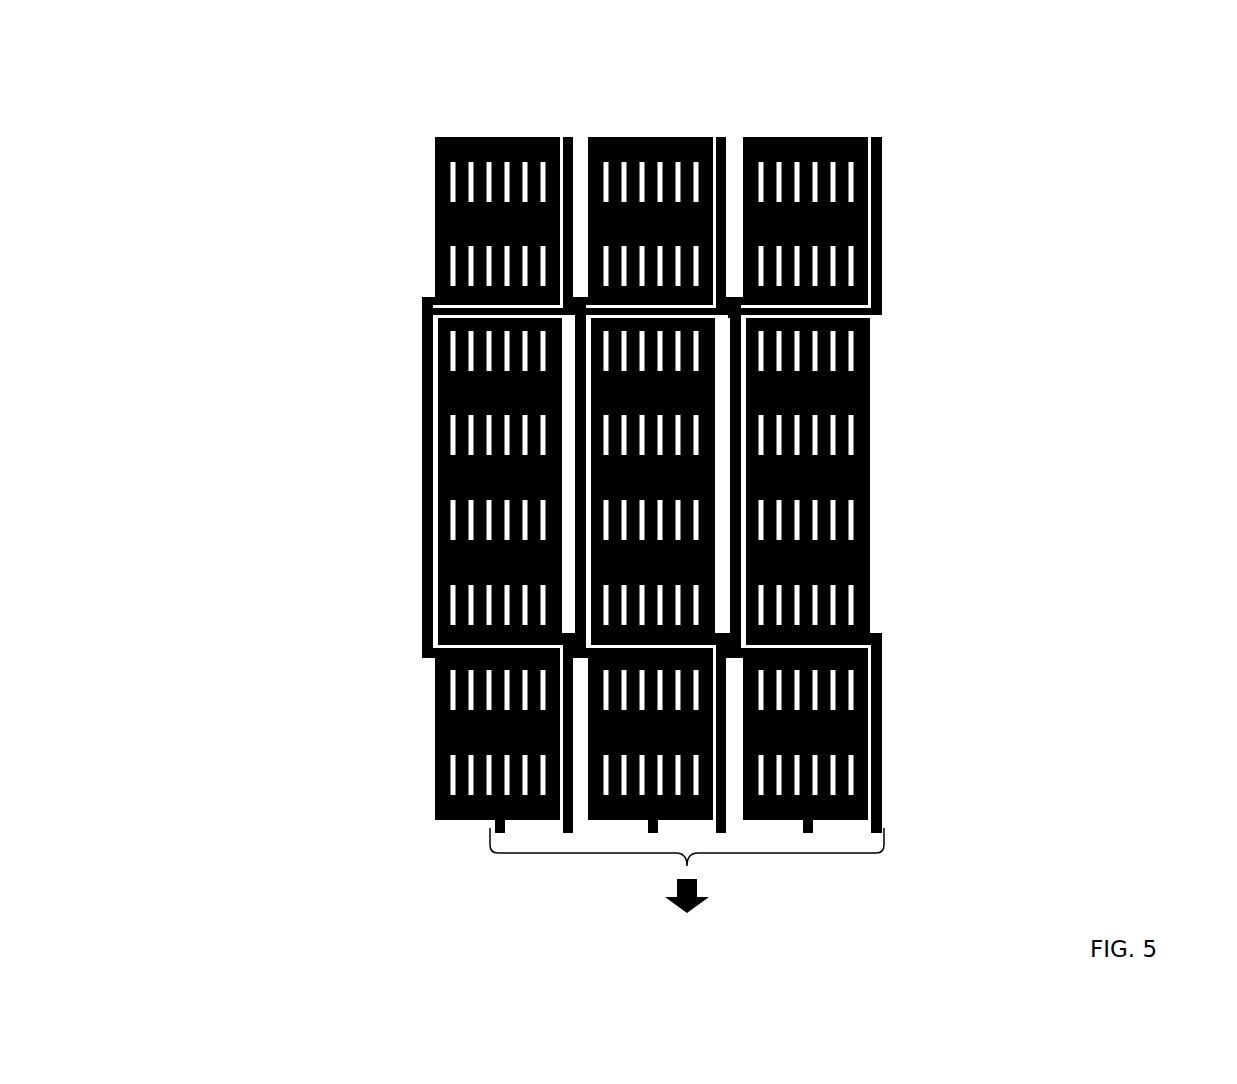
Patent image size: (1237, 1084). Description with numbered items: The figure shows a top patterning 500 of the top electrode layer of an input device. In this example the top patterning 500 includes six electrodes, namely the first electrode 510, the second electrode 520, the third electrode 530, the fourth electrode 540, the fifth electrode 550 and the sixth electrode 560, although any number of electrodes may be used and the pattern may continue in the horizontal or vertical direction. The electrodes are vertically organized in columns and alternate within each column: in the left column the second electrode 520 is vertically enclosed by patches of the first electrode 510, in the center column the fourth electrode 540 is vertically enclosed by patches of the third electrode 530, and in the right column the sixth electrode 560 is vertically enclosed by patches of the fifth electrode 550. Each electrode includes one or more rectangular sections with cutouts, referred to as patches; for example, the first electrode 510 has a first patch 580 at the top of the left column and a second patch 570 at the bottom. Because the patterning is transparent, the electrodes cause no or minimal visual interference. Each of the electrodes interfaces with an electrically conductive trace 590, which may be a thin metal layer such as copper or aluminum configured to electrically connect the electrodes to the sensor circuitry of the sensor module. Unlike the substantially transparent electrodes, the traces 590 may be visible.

The top patterning 500 is at (666, 502).
The electrode 1 510 is at (358, 482).
The electrode 2 520 is at (477, 477).
The electrode 3 530 is at (709, 672).
The electrode 4 540 is at (706, 477).
The electrode 5 550 is at (851, 730).
The electrode 6 560 is at (851, 477).
The second patch of electrode 1 570 is at (381, 742).
The first patch of electrode 1 580 is at (437, 197).
The trace 590 is at (624, 868).